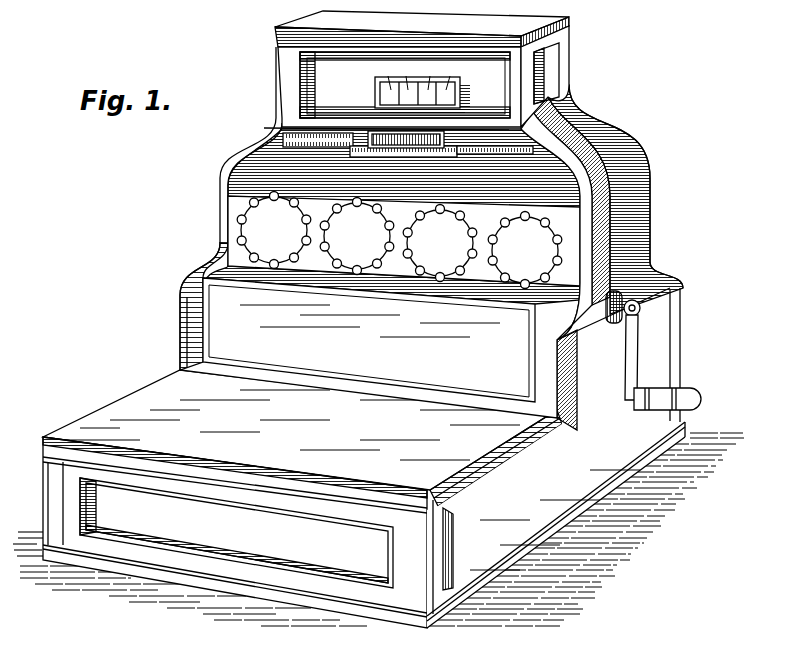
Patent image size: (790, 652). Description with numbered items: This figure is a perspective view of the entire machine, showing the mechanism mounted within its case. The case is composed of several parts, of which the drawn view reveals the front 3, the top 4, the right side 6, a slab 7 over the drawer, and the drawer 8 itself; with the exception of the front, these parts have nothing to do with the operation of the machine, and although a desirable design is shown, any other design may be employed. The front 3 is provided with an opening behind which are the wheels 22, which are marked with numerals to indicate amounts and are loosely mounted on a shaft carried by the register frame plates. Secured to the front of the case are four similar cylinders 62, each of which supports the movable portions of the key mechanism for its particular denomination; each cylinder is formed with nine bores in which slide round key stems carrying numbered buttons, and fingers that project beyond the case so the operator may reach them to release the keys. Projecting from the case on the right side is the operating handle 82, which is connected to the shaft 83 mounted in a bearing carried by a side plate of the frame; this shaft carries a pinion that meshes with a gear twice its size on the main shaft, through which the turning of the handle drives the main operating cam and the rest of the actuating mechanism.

The front 3 is at (380, 330).
The top 4 is at (416, 69).
The right side 6 is at (556, 458).
The slab 7 is at (302, 438).
The drawer 8 is at (235, 532).
The wheels 22 is at (420, 148).
The cylinders 62 is at (399, 240).
The operating handle 82 is at (634, 364).
The shaft 83 is at (641, 306).